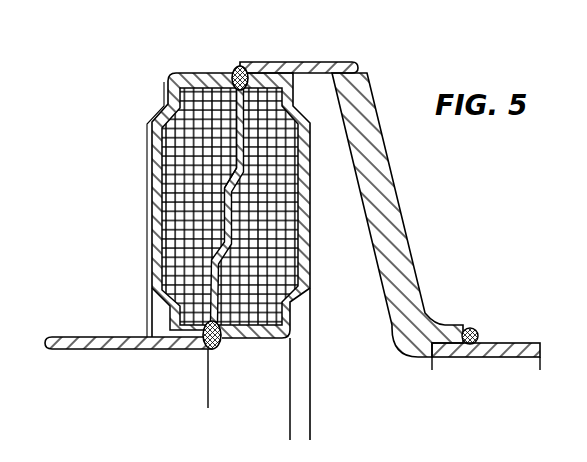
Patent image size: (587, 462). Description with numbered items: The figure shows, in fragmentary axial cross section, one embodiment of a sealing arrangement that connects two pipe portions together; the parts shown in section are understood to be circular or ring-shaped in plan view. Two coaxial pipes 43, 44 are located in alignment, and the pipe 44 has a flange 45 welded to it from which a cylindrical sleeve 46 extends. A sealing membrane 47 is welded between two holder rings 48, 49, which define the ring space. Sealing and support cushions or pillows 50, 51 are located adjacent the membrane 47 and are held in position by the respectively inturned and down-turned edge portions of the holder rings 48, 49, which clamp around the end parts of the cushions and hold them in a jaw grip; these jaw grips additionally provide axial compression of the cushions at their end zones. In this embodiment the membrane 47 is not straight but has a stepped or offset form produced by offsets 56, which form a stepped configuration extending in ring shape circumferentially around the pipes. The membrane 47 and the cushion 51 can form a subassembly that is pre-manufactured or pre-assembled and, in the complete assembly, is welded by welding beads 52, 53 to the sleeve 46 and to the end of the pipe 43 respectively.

The pipe 43 is at (120, 352).
The pipe 44 is at (505, 345).
The flange 45 is at (393, 187).
The cylindrical sleeve 46 is at (314, 62).
The sealing membrane 47 is at (237, 165).
The holder ring 48 is at (171, 77).
The holder ring 49 is at (257, 340).
The sealing cushion 50 is at (162, 223).
The sealing cushion 51 is at (292, 235).
The welding bead 52 is at (238, 66).
The welding bead 53 is at (219, 348).
The offset 56 is at (231, 176).